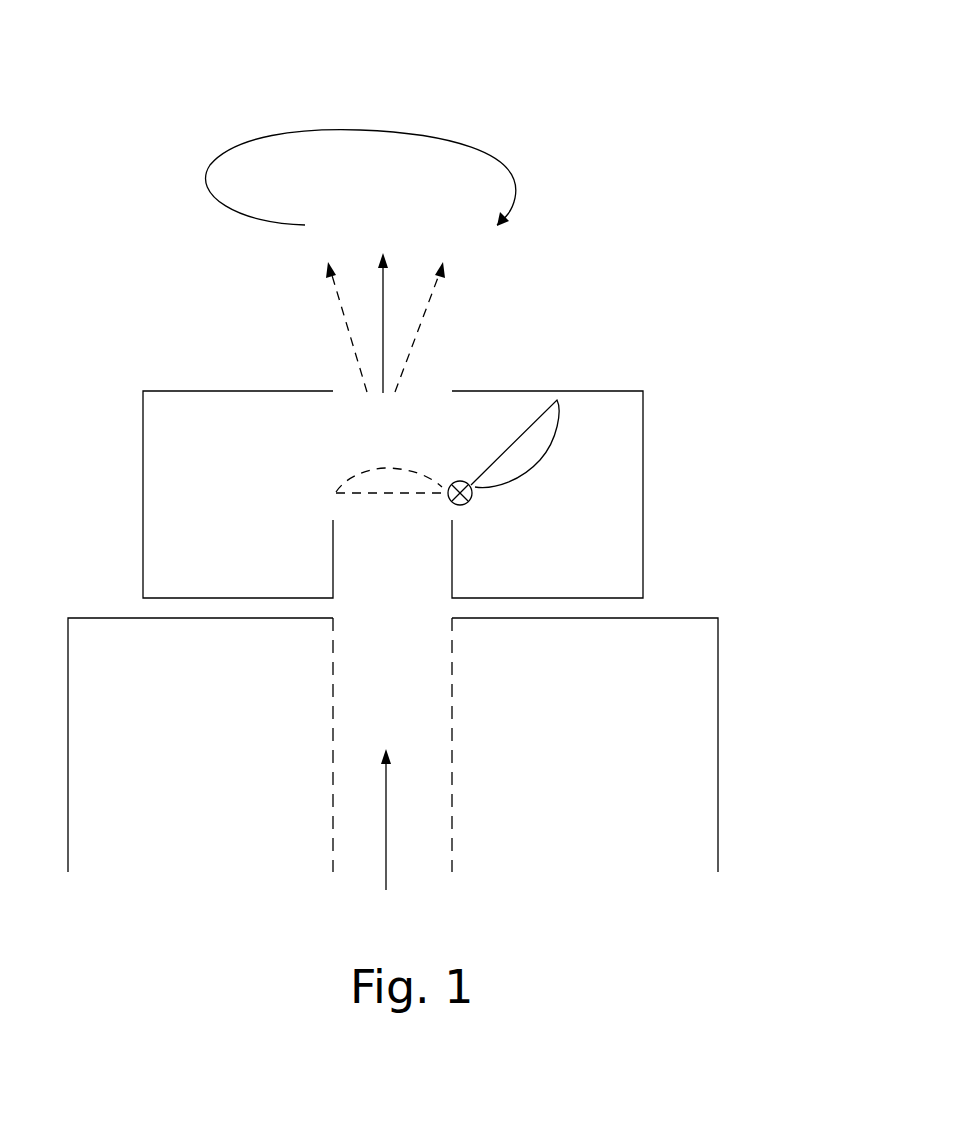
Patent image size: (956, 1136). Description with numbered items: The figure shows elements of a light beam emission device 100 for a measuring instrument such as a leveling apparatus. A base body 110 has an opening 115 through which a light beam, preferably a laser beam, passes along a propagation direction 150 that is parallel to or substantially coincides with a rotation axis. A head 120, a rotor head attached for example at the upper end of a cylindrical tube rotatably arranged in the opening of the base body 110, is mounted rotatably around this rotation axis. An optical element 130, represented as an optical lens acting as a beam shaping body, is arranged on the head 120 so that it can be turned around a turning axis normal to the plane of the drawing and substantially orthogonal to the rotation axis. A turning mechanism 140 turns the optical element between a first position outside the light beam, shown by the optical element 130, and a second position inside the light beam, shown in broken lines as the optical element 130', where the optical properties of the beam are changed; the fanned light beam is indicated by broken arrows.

The light beam emission device 100 is at (470, 78).
The base body 110 is at (718, 747).
The opening 115 is at (452, 740).
The head 120 is at (643, 497).
The optical element 130 is at (535, 454).
The optical element in second position 130' is at (352, 493).
The turning mechanism 140 is at (469, 503).
The propagation direction of the light beam 150 is at (386, 860).